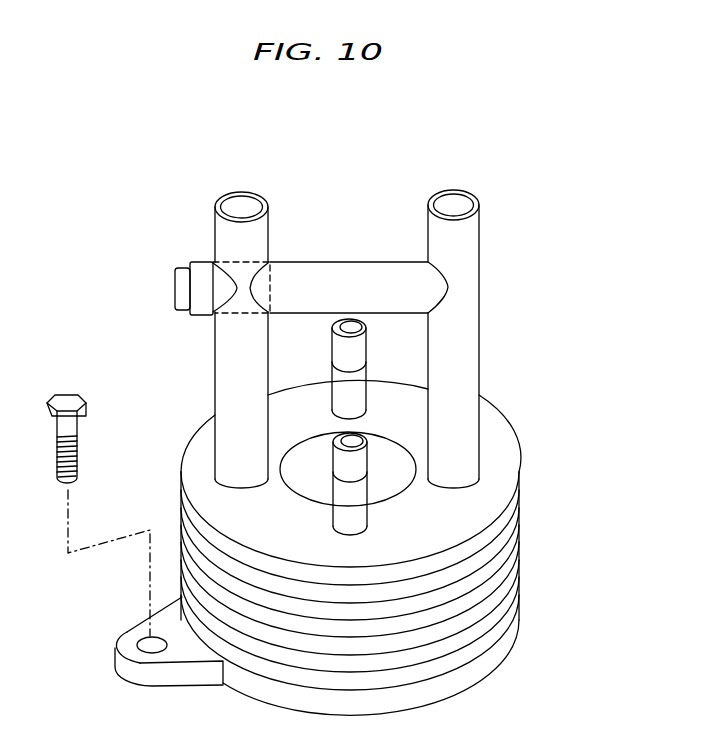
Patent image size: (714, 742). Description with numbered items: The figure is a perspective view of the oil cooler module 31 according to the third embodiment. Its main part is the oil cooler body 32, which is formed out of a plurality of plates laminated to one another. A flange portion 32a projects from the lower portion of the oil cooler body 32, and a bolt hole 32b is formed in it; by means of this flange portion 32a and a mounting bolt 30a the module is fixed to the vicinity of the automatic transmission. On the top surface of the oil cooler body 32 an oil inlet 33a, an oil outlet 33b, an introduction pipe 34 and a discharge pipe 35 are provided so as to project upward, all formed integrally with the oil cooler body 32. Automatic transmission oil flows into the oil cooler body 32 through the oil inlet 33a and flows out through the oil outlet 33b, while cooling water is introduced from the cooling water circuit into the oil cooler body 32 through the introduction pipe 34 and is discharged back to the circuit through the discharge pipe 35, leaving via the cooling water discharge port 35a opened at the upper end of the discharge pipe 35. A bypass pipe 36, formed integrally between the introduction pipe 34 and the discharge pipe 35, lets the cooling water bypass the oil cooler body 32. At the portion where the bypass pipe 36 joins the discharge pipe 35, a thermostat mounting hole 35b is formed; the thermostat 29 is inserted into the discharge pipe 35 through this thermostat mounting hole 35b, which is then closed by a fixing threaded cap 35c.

The thermostat 29 is at (210, 280).
The mounting bolt 30a is at (68, 393).
The oil cooler module 31 is at (560, 393).
The oil cooler body 32 is at (527, 563).
The flange portion 32a is at (125, 665).
The bolt hole 32b is at (142, 642).
The oil inlet 33a is at (365, 437).
The oil outlet 33b is at (358, 322).
The introduction pipe 34 is at (472, 258).
The discharge pipe 35 is at (220, 392).
The cooling water discharge port 35a is at (240, 220).
The thermostat mounting hole 35b is at (452, 218).
The fixing threaded cap 35c is at (175, 290).
The bypass pipe 36 is at (342, 262).